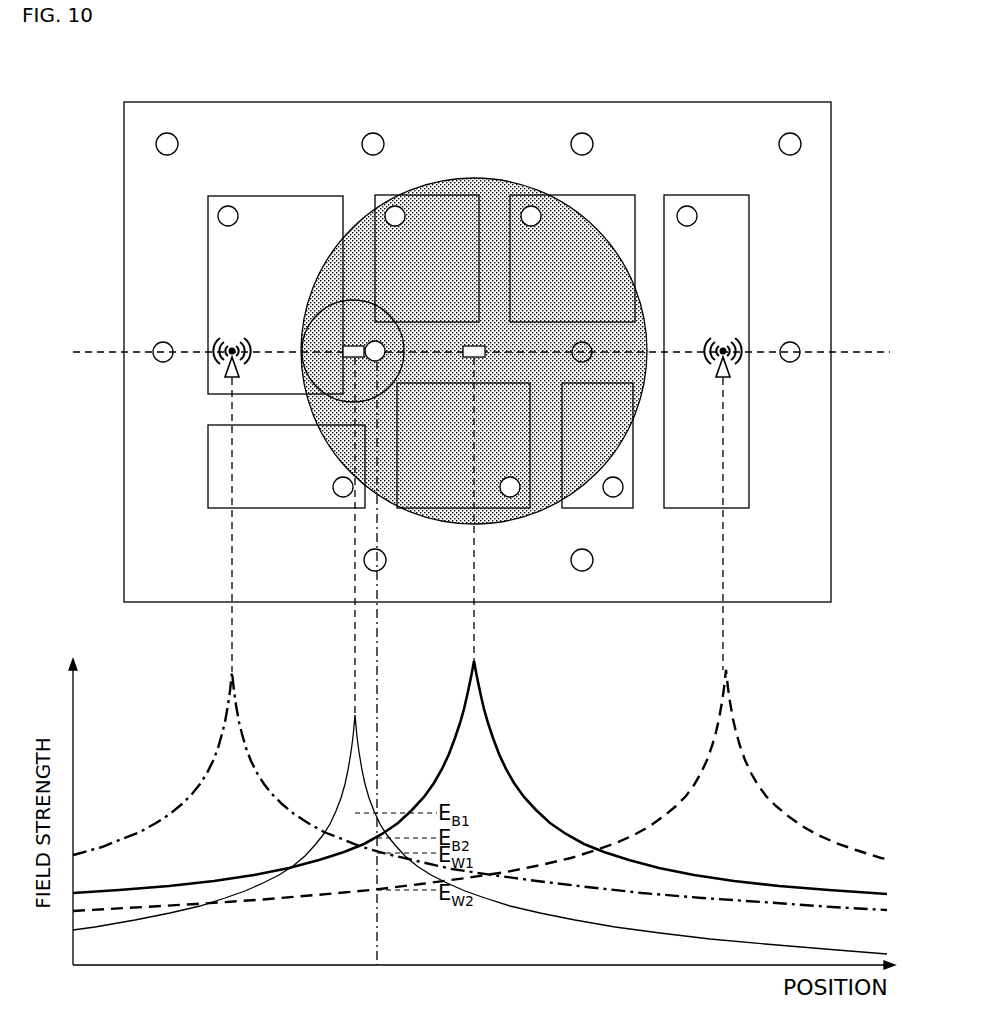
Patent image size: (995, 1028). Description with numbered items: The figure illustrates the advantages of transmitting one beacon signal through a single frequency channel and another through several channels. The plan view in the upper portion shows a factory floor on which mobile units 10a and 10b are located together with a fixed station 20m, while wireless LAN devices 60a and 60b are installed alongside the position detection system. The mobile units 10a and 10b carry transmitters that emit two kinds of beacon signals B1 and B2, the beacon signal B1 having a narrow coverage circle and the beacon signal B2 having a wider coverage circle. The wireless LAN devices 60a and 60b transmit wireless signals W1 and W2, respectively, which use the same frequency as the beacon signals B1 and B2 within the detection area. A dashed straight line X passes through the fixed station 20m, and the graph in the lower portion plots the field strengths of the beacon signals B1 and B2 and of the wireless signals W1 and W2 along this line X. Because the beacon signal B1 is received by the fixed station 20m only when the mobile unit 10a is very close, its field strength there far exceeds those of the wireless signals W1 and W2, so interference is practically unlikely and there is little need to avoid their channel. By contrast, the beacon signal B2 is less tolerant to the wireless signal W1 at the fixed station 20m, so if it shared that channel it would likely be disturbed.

The straight line X is at (106, 351).
The wireless signal W1 is at (212, 345).
The wireless signal W2 is at (742, 347).
The wireless LAN device 60a is at (224, 376).
The wireless LAN device 60b is at (726, 378).
The beacon signal B1 is at (392, 318).
The beacon signal B2 is at (525, 512).
The mobile unit 10a is at (346, 347).
The mobile unit 10b is at (485, 357).
The fixed station 20m is at (385, 348).